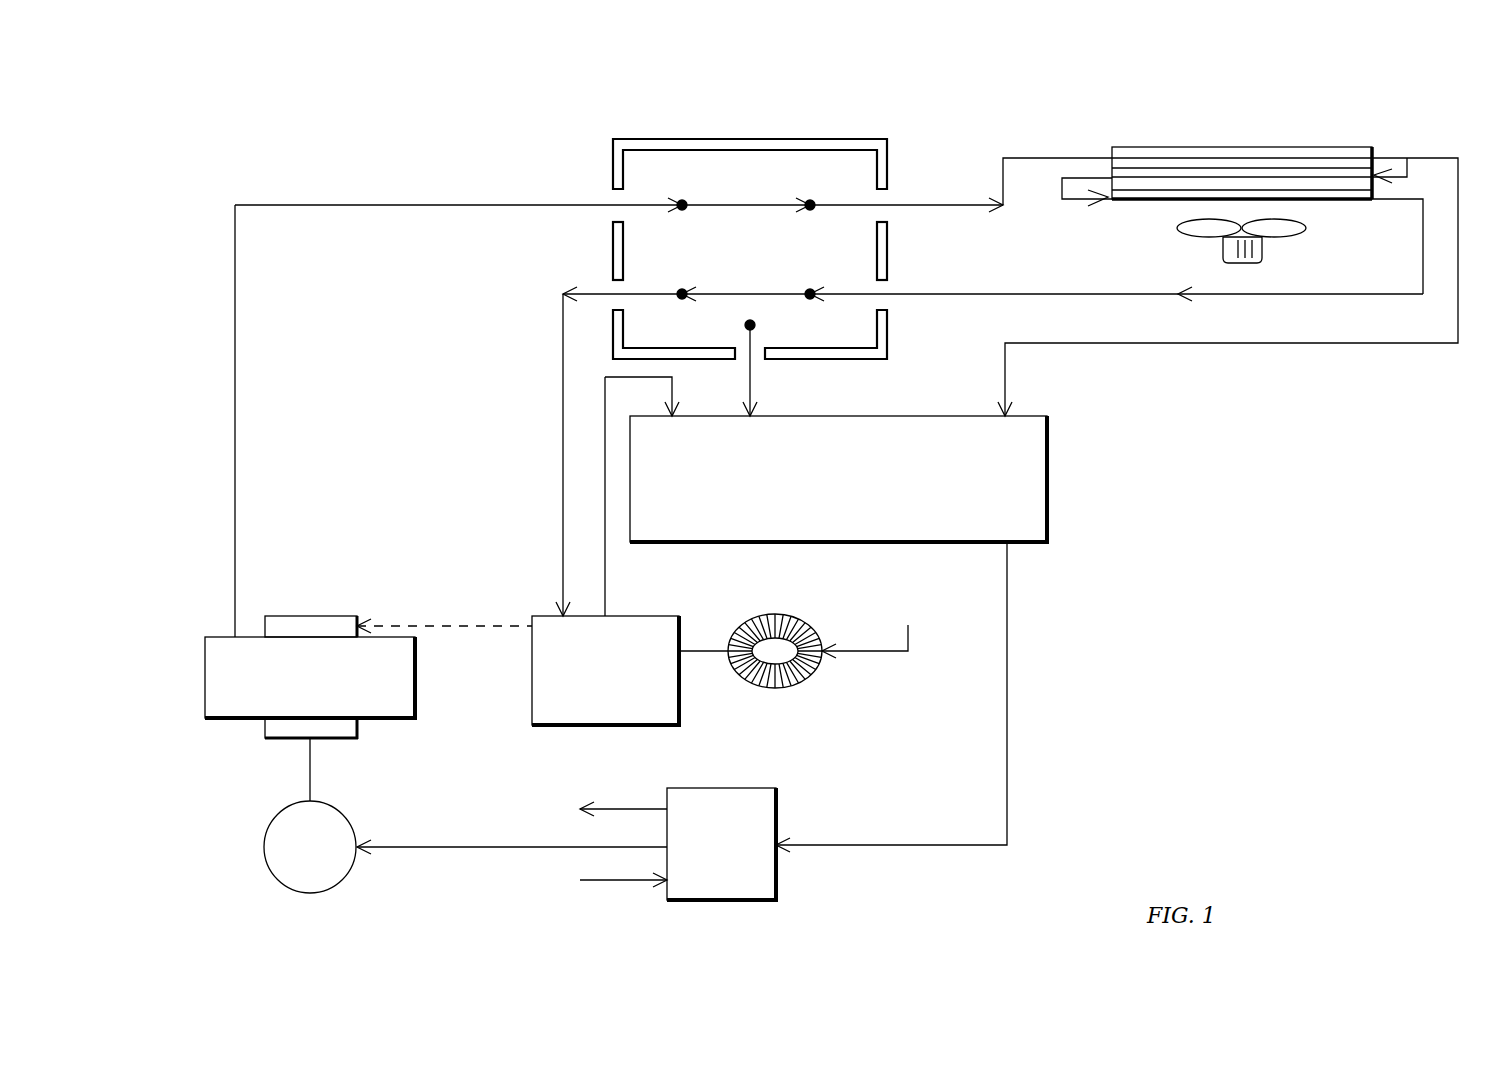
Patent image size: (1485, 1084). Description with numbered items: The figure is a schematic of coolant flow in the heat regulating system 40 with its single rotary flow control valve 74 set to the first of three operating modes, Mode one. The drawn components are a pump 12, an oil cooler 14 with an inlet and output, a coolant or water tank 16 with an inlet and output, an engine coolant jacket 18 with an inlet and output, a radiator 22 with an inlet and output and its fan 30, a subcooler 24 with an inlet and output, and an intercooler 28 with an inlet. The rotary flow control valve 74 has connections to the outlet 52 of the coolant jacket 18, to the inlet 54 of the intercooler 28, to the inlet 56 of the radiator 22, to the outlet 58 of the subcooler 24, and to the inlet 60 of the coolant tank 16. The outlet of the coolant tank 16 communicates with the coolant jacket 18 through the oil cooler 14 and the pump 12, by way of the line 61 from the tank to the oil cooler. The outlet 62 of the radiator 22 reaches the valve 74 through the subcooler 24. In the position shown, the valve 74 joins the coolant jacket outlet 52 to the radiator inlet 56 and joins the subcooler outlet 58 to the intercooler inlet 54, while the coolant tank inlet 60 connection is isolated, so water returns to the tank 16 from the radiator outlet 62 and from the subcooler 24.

The pump 12 is at (265, 845).
The oil cooler 14 is at (720, 900).
The coolant tank 16 is at (1047, 475).
The coolant jacket 18 is at (245, 722).
The radiator 22 is at (1277, 147).
The subcooler 24 is at (1150, 200).
The intercooler 28 is at (532, 668).
The fan 30 is at (1262, 250).
The cooling system 40 is at (364, 173).
The outlet of the engine coolant jacket 52 is at (236, 575).
The inlet of the intercooler 54 is at (563, 556).
The inlet of the radiator 56 is at (1112, 150).
The outlet of the subcooler 58 is at (1407, 190).
The inlet of the coolant tank 60 is at (750, 370).
The engine to oil cooler conduit 61 is at (1007, 720).
The outlet of the radiator 62 is at (1372, 150).
The rotary flow control valve 74 is at (613, 168).